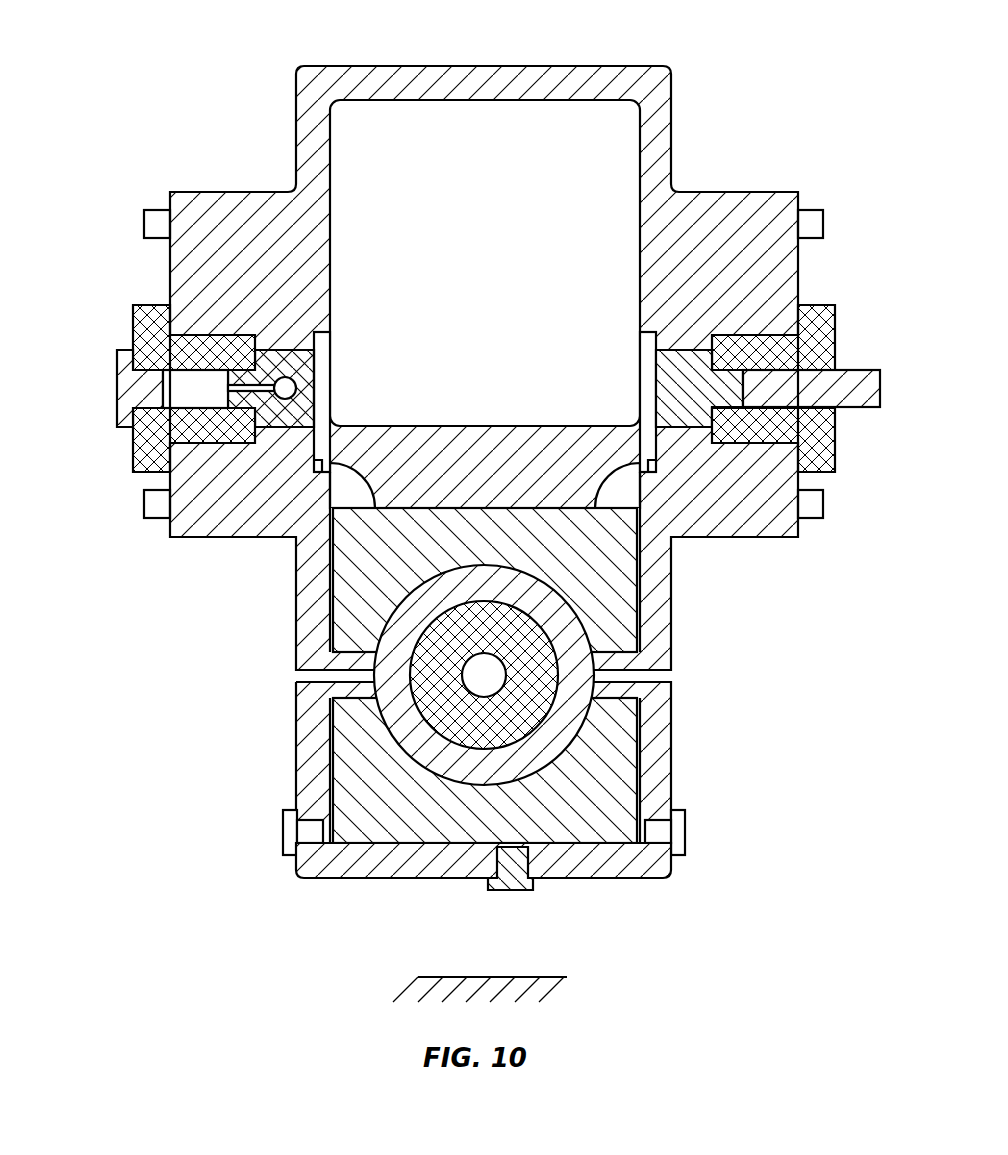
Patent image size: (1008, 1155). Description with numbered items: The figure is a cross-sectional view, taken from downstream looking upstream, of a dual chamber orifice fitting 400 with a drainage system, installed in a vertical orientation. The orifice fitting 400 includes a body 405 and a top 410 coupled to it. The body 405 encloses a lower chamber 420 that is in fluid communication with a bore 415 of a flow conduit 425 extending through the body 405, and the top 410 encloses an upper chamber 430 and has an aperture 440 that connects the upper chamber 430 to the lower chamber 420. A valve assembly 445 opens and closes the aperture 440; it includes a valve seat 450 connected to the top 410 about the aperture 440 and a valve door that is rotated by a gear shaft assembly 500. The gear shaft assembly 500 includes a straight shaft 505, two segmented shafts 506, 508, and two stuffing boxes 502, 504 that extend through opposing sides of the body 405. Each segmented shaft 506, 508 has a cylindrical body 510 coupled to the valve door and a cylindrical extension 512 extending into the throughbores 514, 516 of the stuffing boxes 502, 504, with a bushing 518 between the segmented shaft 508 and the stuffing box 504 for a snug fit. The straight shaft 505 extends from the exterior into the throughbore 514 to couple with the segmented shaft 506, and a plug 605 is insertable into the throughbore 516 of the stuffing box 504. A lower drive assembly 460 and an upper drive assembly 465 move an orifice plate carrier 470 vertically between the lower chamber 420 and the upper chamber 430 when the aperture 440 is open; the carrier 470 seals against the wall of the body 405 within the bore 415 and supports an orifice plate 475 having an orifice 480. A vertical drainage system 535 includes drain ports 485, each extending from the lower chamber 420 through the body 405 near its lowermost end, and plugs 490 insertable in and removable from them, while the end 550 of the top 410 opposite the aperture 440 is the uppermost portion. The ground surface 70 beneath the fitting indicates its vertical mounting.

The orifice fitting 400 is at (211, 93).
The body 405 is at (673, 700).
The top 410 is at (675, 129).
The bore 415 is at (455, 721).
The lower chamber 420 is at (333, 597).
The flow conduit 425 is at (395, 700).
The upper chamber 430 is at (466, 276).
The aperture 440 is at (352, 489).
The valve assembly 445 is at (662, 490).
The valve seat 450 is at (314, 466).
The lower drive assembly 460 is at (810, 519).
The upper drive assembly 465 is at (810, 210).
The orifice plate carrier 470 is at (612, 539).
The orifice plate 475 is at (500, 638).
The orifice 480 is at (467, 688).
The drain port 485 is at (644, 832).
The plug 490 is at (686, 835).
The gear shaft assembly 500 is at (833, 287).
The stuffing box 502 is at (838, 446).
The stuffing box 504 is at (134, 330).
The straight shaft 505 is at (846, 412).
The segmented shaft 506 is at (687, 344).
The segmented shaft 508 is at (283, 344).
The cylindrical body 510 is at (298, 392).
The cylindrical extension 512 is at (240, 350).
The throughbore 514 is at (843, 372).
The throughbore 516 is at (178, 401).
The bushing 518 is at (232, 445).
The vertical drainage system 535 is at (662, 902).
The end 550 is at (483, 66).
The plug 605 is at (117, 385).
The ground 70 is at (531, 977).